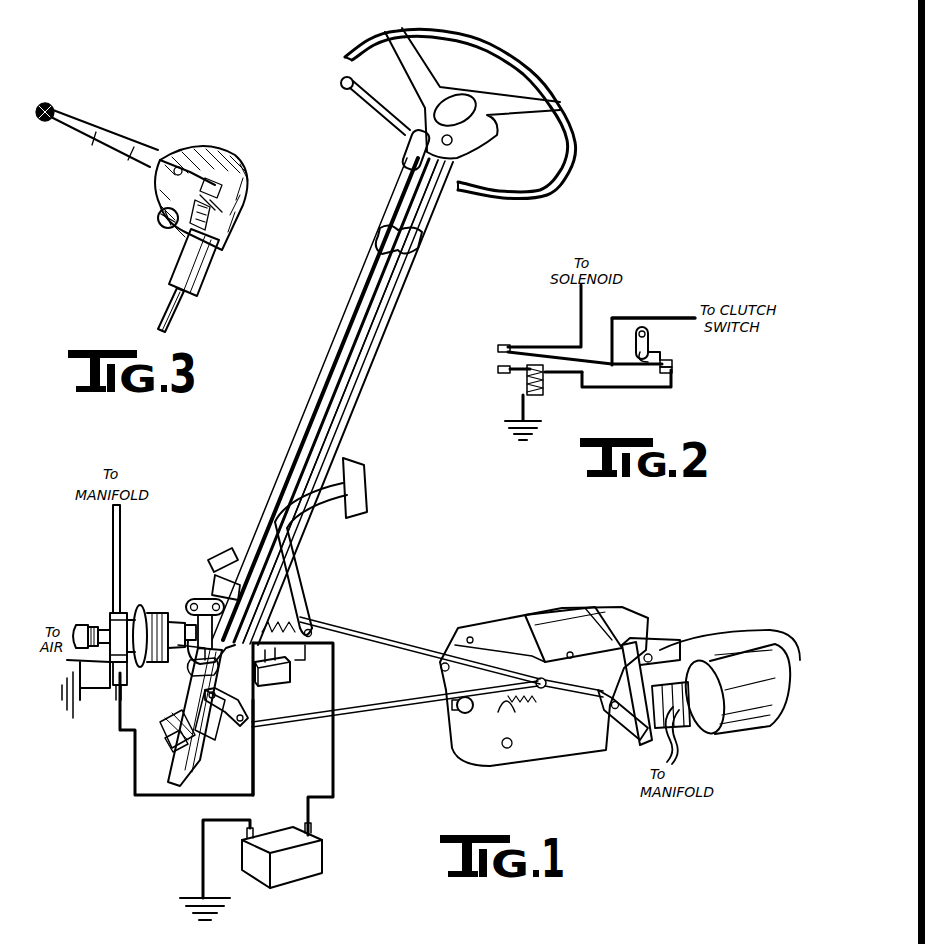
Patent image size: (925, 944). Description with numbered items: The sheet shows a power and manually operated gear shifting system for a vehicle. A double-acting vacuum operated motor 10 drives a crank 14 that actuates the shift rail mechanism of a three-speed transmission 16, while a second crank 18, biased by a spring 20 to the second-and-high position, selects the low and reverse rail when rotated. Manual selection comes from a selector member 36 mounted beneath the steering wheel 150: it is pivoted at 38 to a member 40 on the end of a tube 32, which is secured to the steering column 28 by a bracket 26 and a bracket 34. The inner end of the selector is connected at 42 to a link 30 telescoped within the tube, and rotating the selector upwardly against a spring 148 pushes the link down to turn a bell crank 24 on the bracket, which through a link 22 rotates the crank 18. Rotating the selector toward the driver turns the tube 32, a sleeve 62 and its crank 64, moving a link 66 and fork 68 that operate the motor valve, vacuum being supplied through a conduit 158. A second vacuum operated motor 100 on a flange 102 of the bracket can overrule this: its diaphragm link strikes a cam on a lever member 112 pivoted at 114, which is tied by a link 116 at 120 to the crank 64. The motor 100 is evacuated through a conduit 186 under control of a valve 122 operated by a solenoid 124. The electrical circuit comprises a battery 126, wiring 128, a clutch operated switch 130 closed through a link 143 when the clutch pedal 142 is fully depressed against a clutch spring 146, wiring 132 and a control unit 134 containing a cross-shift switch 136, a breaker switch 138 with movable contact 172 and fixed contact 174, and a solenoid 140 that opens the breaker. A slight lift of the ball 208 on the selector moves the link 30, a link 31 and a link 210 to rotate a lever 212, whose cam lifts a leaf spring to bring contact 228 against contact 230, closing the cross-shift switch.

In FIG. 1, the vacuum operated motor 10 is at (731, 668).
In FIG. 1, the crank 14 is at (655, 640).
In FIG. 1, the transmission 16 is at (545, 752).
In FIG. 1, the crank 18 is at (510, 653).
In FIG. 1, the spring 20 is at (520, 705).
In FIG. 1, the link 22 is at (402, 700).
In FIG. 1, the bell crank 24 is at (232, 712).
In FIG. 1, the bracket 26 is at (200, 678).
In FIG. 1, the steering column 28 is at (340, 428).
In FIG. 3, the link 30 is at (175, 313).
In FIG. 1, the link 30 is at (192, 686).
In FIG. 1, the link 31 is at (192, 708).
In FIG. 3, the tube 32 is at (200, 277).
In FIG. 1, the tube 32 is at (330, 378).
In FIG. 1, the bracket 34 is at (422, 247).
In FIG. 3, the selector member 36 is at (150, 150).
In FIG. 1, the selector member 36 is at (377, 117).
In FIG. 3, the pivotal connection 38 is at (187, 167).
In FIG. 3, the member 40 is at (236, 172).
In FIG. 3, the connection 42 is at (240, 192).
In FIG. 1, the sleeve 62 is at (232, 590).
In FIG. 1, the crank 64 is at (205, 597).
In FIG. 1, the link 66 is at (405, 640).
In FIG. 1, the fork 68 is at (606, 706).
In FIG. 1, the vacuum operated motor 100 is at (127, 598).
In FIG. 1, the flange 102 is at (165, 598).
In FIG. 1, the lever member 112 is at (185, 608).
In FIG. 1, the pivotal connection 114 is at (118, 690).
In FIG. 1, the link 116 is at (194, 598).
In FIG. 1, the pivotal connection 120 is at (210, 560).
In FIG. 1, the valve 122 is at (110, 626).
In FIG. 1, the solenoid 124 is at (72, 671).
In FIG. 1, the battery 126 is at (305, 875).
In FIG. 1, the wiring 128 is at (335, 782).
In FIG. 1, the clutch operated switch 130 is at (287, 672).
In FIG. 2, the wiring 132 is at (652, 318).
In FIG. 1, the wiring 132 is at (252, 776).
In FIG. 2, the control unit 134 is at (570, 342).
In FIG. 1, the control unit 134 is at (165, 755).
In FIG. 2, the cross-shift switch 136 is at (674, 366).
In FIG. 2, the breaker switch 138 is at (497, 350).
In FIG. 2, the solenoid 140 is at (520, 387).
In FIG. 1, the clutch pedal 142 is at (295, 590).
In FIG. 1, the link 143 is at (308, 650).
In FIG. 1, the clutch spring 146 is at (312, 620).
In FIG. 3, the spring 148 is at (238, 205).
In FIG. 1, the steering wheel 150 is at (578, 148).
In FIG. 1, the conduit 158 is at (690, 742).
In FIG. 2, the movable contact 172 is at (497, 350).
In FIG. 2, the fixed contact 174 is at (497, 370).
In FIG. 1, the conduit 186 is at (117, 567).
In FIG. 3, the ball 208 is at (50, 102).
In FIG. 1, the ball 208 is at (341, 83).
In FIG. 1, the link 210 is at (158, 730).
In FIG. 2, the lever 212 is at (669, 344).
In FIG. 2, the contact 228 is at (673, 361).
In FIG. 2, the contact 230 is at (673, 373).